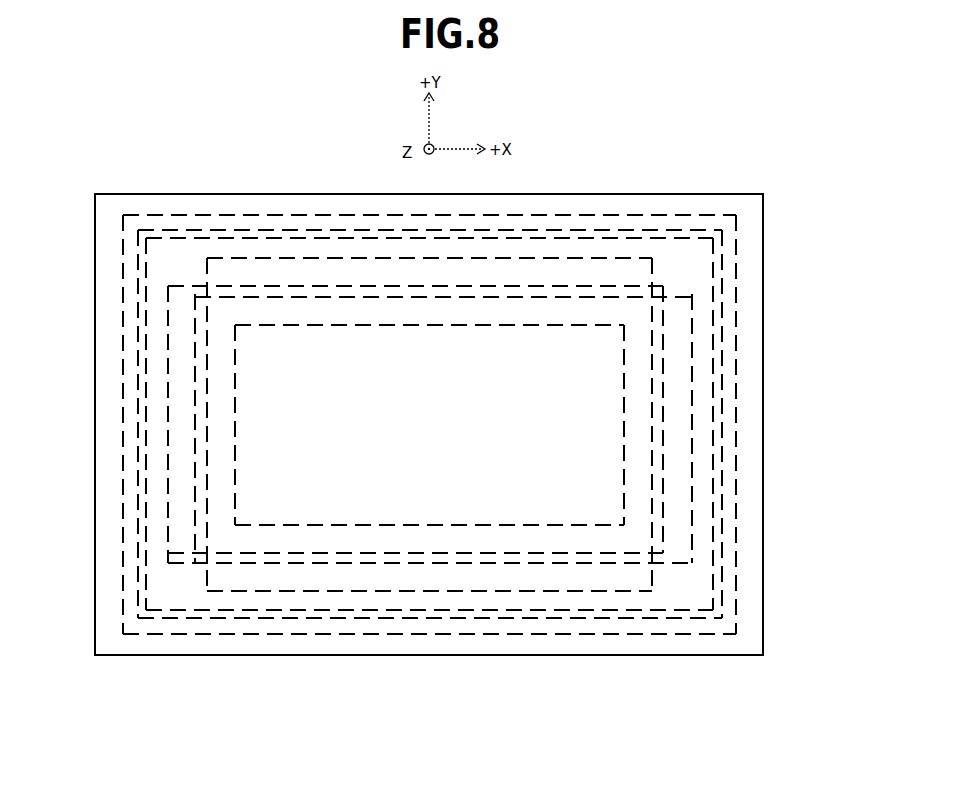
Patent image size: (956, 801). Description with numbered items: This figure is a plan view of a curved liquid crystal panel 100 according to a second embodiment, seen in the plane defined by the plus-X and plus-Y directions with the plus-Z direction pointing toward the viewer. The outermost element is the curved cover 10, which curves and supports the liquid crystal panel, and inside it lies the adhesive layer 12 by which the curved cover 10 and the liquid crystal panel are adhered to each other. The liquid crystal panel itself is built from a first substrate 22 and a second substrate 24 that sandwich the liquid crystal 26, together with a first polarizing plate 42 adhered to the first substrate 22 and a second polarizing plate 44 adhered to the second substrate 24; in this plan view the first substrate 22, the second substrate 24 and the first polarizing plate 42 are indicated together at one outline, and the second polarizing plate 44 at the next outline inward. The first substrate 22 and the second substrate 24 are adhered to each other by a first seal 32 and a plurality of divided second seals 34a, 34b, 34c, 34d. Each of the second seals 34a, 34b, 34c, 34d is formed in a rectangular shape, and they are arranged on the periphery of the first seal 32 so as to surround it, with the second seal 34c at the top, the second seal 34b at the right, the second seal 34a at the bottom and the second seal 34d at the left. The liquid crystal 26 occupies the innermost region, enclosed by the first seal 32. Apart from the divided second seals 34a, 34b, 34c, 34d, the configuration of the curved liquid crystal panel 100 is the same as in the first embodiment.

The curved liquid crystal panel 100 is at (685, 148).
The curved cover 10 is at (763, 280).
The adhesive layer 12 is at (736, 317).
The first substrate 22 is at (430, 468).
The second substrate 24 is at (430, 468).
The first polarizing plate 42 is at (193, 620).
The second polarizing plate 44 is at (485, 612).
The second seal 34a is at (295, 591).
The second seal 34b is at (692, 482).
The second seal 34c is at (271, 258).
The second seal 34d is at (168, 478).
The first seal 32 is at (355, 553).
The liquid crystal 26 is at (423, 520).